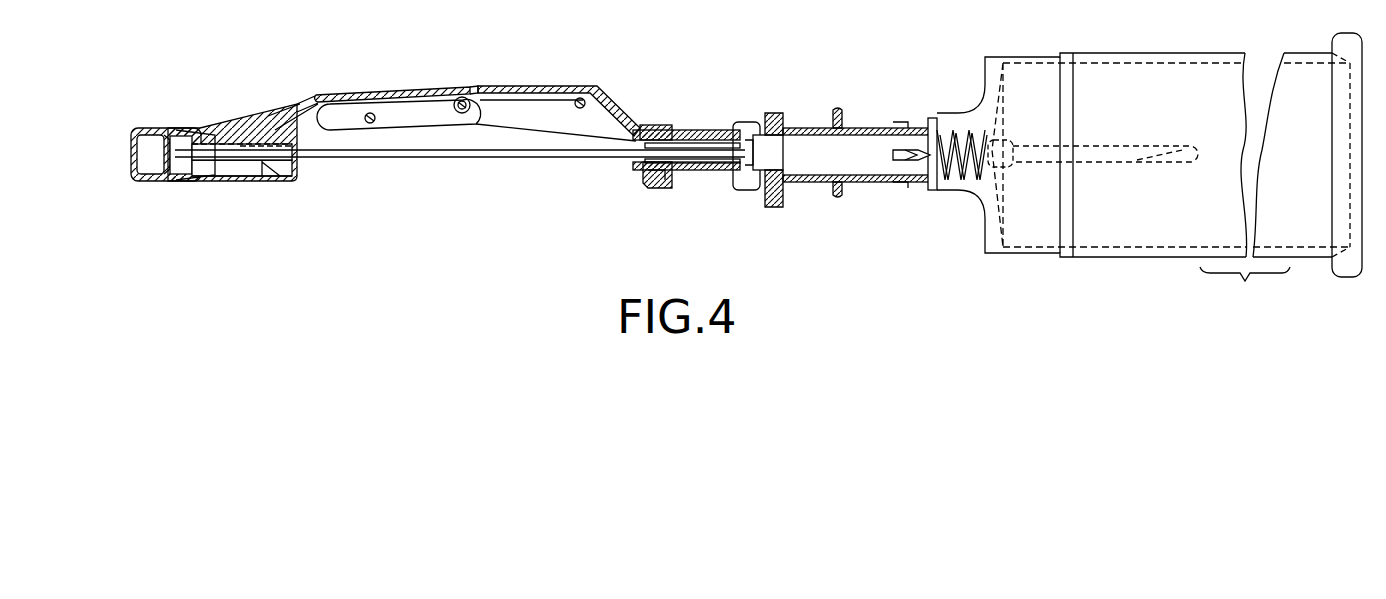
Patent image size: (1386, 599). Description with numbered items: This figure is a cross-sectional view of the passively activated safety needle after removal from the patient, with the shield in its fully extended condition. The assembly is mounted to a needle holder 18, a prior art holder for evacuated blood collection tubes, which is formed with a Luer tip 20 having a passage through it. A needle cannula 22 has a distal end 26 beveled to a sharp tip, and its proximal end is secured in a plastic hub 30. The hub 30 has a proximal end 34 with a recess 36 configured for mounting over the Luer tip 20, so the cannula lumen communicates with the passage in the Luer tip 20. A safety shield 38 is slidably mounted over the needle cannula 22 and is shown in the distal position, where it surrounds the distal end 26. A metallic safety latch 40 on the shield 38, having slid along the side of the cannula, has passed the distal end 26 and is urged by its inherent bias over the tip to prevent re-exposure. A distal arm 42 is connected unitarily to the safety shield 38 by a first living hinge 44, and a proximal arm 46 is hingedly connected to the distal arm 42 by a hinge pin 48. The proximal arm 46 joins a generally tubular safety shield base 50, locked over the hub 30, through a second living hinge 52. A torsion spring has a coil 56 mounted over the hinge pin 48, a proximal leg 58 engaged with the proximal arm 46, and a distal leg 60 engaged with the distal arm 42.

The needle holder 18 is at (1125, 52).
The Luer tip 20 is at (875, 130).
The needle cannula 22 is at (380, 158).
The distal end 26 is at (185, 150).
The hub 30 is at (813, 112).
The proximal end 34 is at (838, 190).
The recess 36 is at (820, 183).
The safety shield 38 is at (152, 182).
The safety latch 40 is at (183, 182).
The distal arm 42 is at (418, 88).
The first living hinge 44 is at (306, 112).
The proximal arm 46 is at (538, 93).
The hinge pin 48 is at (461, 97).
The safety shield base 50 is at (656, 189).
The second living hinge 52 is at (633, 132).
The coil 56 is at (484, 98).
The proximal leg 58 is at (522, 110).
The distal leg 60 is at (373, 113).